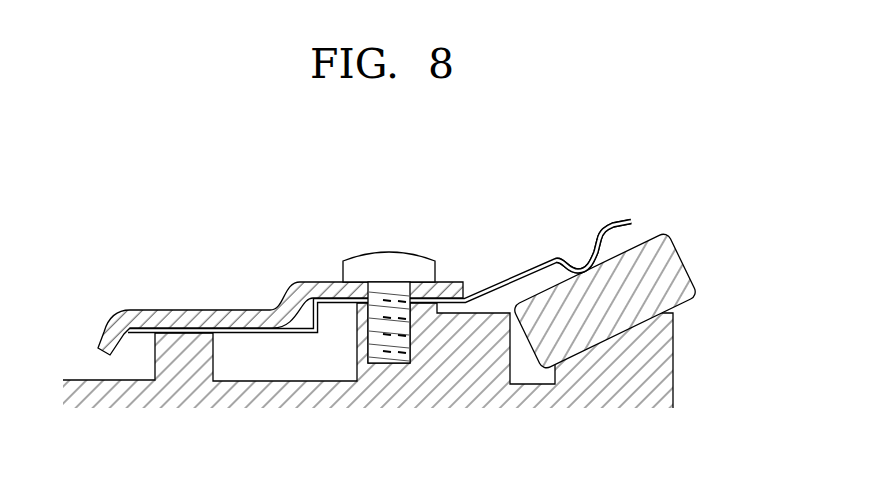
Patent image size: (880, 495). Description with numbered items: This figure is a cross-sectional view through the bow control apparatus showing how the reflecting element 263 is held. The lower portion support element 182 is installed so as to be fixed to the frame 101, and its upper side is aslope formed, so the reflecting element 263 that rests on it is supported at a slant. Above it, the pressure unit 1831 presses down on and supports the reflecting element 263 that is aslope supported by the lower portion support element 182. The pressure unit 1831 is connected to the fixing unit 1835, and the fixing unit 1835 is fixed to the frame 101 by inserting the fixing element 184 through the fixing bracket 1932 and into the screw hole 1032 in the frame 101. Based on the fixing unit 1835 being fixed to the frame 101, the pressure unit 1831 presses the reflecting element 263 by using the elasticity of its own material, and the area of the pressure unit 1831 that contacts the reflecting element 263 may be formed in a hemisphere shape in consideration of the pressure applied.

The frame 101 is at (285, 390).
The lower portion support element 182 is at (667, 360).
The screw hole 1032 is at (411, 323).
The fixing element 184 is at (393, 256).
The fixing bracket 1932 is at (320, 288).
The fixing unit 1835 is at (450, 304).
The pressure unit 1831 is at (613, 223).
The reflecting element 263 is at (682, 267).